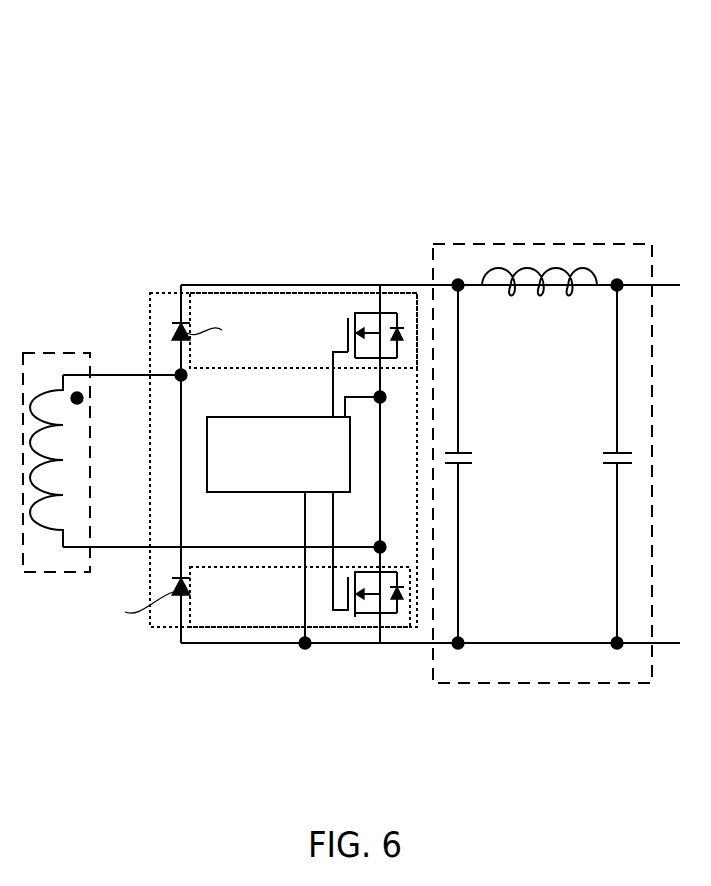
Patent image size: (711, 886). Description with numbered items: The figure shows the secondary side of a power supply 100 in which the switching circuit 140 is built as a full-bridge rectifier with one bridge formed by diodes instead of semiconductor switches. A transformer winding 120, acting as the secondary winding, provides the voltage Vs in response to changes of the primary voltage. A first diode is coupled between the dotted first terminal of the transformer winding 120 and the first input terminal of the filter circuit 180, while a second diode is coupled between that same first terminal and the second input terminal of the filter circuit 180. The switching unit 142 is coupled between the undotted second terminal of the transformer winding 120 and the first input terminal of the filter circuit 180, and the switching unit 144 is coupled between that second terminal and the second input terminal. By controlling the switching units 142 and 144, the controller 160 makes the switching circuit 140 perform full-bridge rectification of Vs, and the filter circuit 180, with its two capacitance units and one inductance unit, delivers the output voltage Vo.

The power supply 100 is at (73, 36).
The transformer winding 120 is at (70, 352).
The switching circuit 140 is at (253, 455).
The switching unit 142 is at (348, 333).
The switching unit 144 is at (360, 613).
The controller 160 is at (298, 481).
The filter circuit 180 is at (560, 244).